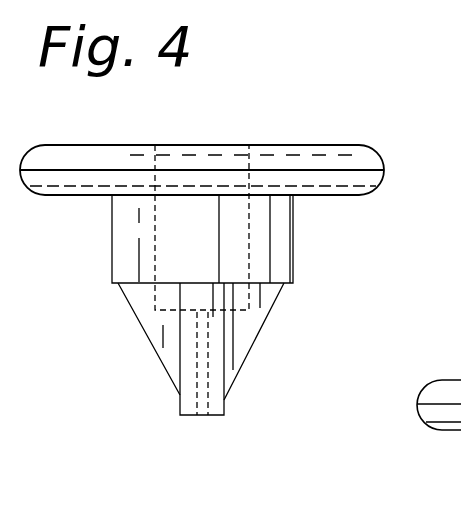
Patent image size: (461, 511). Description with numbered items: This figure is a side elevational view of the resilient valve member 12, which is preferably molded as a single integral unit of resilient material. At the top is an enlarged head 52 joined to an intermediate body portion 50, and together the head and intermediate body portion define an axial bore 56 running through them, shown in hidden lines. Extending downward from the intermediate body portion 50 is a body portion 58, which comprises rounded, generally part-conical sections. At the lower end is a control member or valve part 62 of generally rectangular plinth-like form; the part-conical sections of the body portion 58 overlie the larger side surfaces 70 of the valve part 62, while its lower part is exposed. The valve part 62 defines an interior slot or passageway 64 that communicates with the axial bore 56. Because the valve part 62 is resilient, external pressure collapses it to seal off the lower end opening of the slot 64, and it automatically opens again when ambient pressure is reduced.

The resilient valve member 12 is at (371, 145).
The enlarged head 52 is at (385, 175).
The intermediate body portion 50 is at (293, 228).
The axial bore 56 is at (155, 165).
The body portion 58 is at (152, 322).
The larger side surfaces 70 is at (224, 405).
The valve part 62 is at (187, 380).
The slot 64 is at (203, 415).